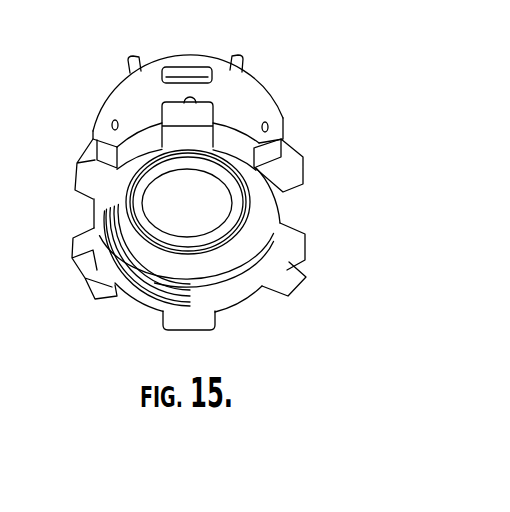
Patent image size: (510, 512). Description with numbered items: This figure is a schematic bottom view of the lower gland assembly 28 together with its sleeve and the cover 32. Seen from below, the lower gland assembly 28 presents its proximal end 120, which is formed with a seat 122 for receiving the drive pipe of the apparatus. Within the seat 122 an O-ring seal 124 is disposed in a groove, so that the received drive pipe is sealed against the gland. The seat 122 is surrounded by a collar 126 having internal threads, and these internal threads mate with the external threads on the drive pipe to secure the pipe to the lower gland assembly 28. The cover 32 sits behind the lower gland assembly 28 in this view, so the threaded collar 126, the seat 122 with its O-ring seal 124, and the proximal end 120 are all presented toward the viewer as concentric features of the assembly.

The cover 32 is at (115, 99).
The lower gland assembly 28 is at (278, 222).
The proximal end 120 is at (250, 160).
The seat 122 is at (252, 236).
The O-ring seal 124 is at (147, 237).
The collar 126 is at (158, 283).